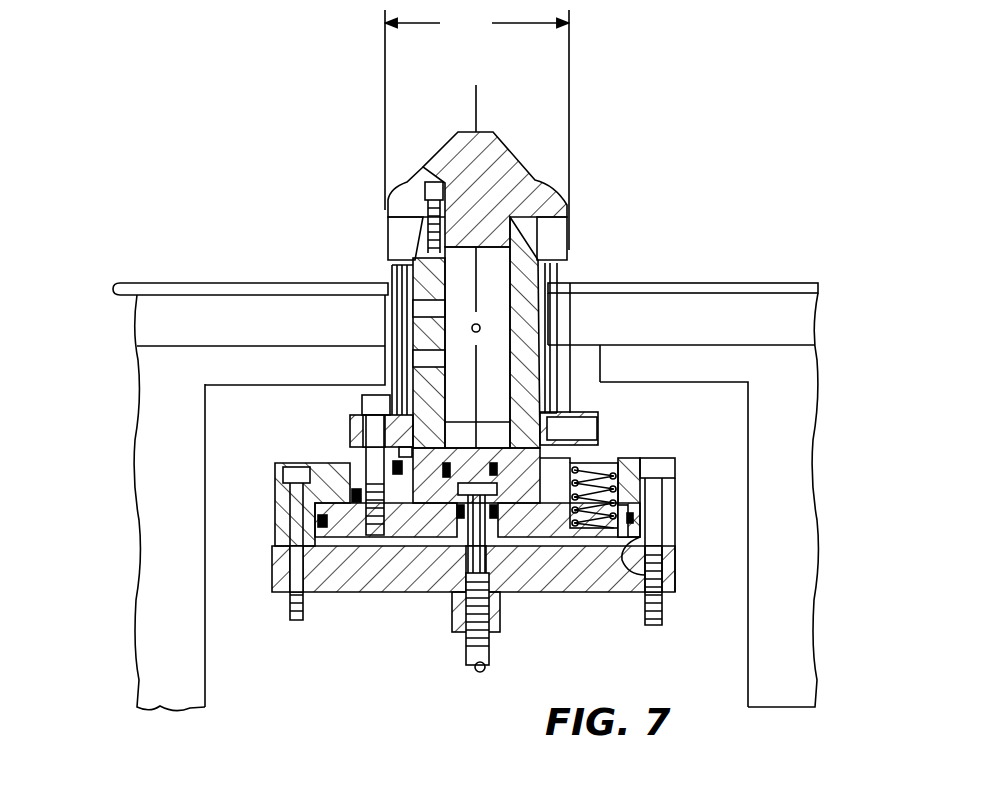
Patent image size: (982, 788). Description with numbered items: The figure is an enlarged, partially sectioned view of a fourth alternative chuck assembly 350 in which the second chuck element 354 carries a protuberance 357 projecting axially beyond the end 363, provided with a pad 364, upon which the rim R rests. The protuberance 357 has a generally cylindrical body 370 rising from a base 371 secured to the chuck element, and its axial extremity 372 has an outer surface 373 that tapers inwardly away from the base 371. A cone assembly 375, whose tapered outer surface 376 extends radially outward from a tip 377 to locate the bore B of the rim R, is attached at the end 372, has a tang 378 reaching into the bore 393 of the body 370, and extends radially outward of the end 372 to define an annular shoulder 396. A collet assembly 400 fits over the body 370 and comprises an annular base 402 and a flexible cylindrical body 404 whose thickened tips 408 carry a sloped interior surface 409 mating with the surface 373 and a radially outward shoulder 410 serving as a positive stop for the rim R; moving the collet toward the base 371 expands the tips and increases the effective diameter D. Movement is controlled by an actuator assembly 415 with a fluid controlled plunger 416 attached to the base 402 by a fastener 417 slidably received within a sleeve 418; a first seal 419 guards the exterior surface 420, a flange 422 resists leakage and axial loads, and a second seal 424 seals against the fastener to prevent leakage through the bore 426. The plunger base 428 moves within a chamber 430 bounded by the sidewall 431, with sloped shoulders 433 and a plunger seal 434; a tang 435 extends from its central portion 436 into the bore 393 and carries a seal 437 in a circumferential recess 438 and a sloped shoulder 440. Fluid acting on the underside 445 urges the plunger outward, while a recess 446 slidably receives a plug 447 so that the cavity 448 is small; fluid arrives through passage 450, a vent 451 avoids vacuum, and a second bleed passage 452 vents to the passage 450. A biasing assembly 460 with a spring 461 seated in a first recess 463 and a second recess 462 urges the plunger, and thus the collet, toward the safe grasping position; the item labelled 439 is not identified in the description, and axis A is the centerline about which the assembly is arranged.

The chuck assembly 350 is at (381, 155).
The second chuck element 354 is at (150, 416).
The protuberance 357 is at (470, 238).
The end 363 is at (263, 293).
The pad 364 is at (185, 305).
The body 370 is at (528, 365).
The base 371 is at (637, 486).
The axial extremity 372 is at (565, 205).
The outer surface 373 is at (552, 217).
The cone assembly 375 is at (507, 133).
The tapered outer surface 376 is at (530, 165).
The tip 377 is at (485, 132).
The tang 378 is at (527, 250).
The bore 393 is at (557, 345).
The annular shoulder 396 is at (395, 218).
The collet assembly 400 is at (386, 348).
The annular base 402 is at (360, 432).
The body 404 is at (648, 292).
The tips 408 is at (402, 243).
The sloped interior surface 409 is at (412, 258).
The shoulder 410 is at (385, 293).
The actuator assembly 415 is at (333, 540).
The fluid controlled actuator 416 is at (547, 573).
The fastener 417 is at (385, 397).
The sleeve 418 is at (357, 453).
The first seal 419 is at (397, 467).
The exterior surface 420 is at (395, 450).
The flange 422 is at (395, 530).
The second seal 424 is at (313, 545).
The bore 426 is at (357, 495).
The plunger base 428 is at (540, 513).
The chamber 430 is at (415, 550).
The sidewall 431 is at (665, 583).
The shoulders 433 is at (620, 513).
The plunger seal 434 is at (634, 518).
The tang 435 is at (490, 435).
The central portion 436 is at (497, 470).
The seal 437 is at (497, 447).
The circumferential recess 438 is at (480, 455).
The channel 439 is at (455, 560).
The shoulder 440 is at (430, 440).
The underside 445 is at (470, 560).
The recess 446 is at (462, 600).
The plug 447 is at (458, 510).
The cavity 448 is at (497, 590).
The passage 450 is at (460, 657).
The vent 451 is at (437, 312).
The second bleed passage 452 is at (498, 650).
The biasing assembly 460 is at (595, 458).
The spring 461 is at (620, 477).
The second recess 462 is at (620, 553).
The first recess 463 is at (600, 475).
The axis A is at (475, 100).
The bore B is at (557, 280).
The effective diameter D is at (477, 129).
The rim R is at (757, 288).